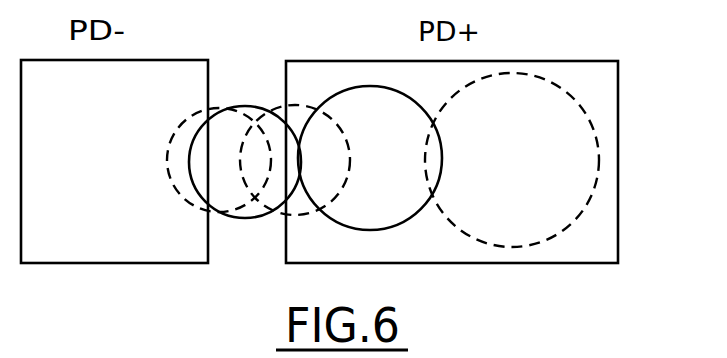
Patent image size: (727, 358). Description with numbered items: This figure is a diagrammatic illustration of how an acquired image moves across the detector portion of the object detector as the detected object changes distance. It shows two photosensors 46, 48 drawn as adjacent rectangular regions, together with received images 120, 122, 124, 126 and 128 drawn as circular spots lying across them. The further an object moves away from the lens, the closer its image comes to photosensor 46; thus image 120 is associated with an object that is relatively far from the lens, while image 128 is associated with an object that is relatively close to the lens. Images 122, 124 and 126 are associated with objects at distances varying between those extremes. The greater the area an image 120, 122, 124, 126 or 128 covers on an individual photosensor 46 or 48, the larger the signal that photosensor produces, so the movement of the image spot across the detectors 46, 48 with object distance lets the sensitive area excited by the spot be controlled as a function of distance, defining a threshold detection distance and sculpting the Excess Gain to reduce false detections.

The photosensor 46 is at (97, 110).
The photosensor 48 is at (583, 62).
The received image 120 is at (216, 107).
The received image 122 is at (263, 212).
The received image 124 is at (307, 107).
The received image 126 is at (375, 231).
The received image 128 is at (597, 168).